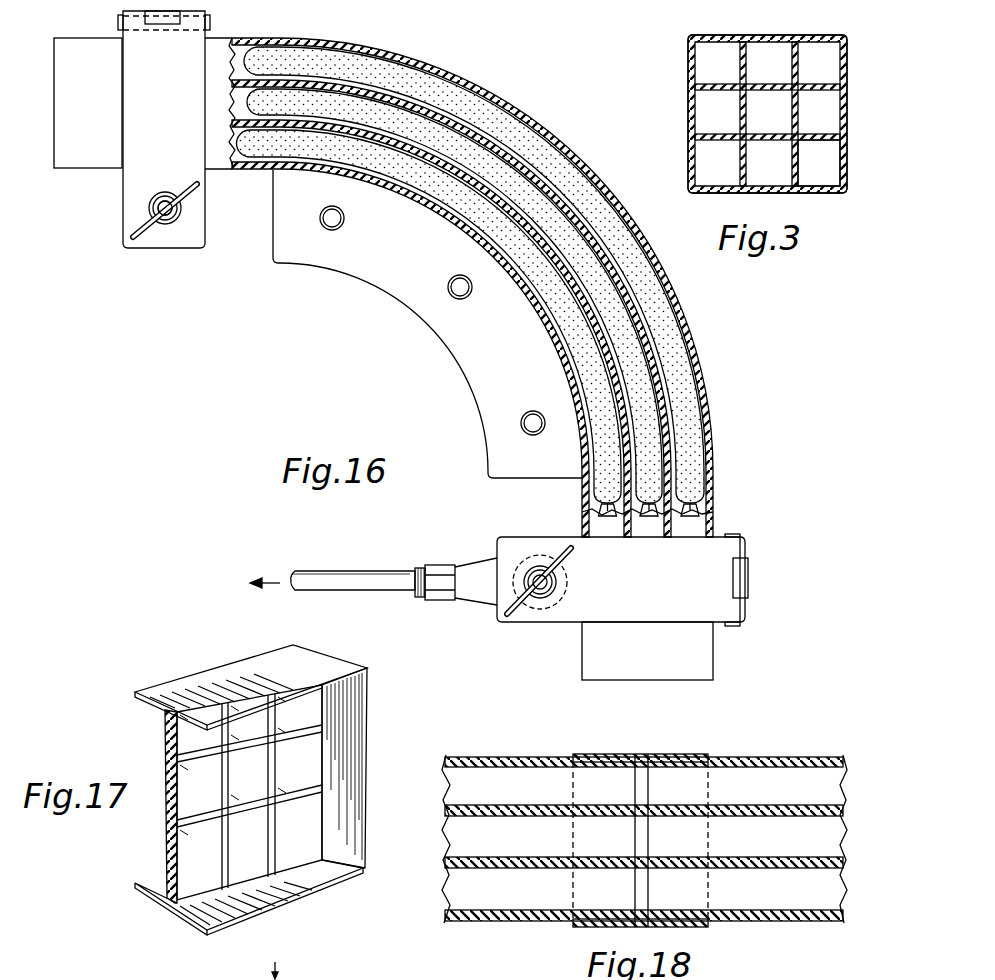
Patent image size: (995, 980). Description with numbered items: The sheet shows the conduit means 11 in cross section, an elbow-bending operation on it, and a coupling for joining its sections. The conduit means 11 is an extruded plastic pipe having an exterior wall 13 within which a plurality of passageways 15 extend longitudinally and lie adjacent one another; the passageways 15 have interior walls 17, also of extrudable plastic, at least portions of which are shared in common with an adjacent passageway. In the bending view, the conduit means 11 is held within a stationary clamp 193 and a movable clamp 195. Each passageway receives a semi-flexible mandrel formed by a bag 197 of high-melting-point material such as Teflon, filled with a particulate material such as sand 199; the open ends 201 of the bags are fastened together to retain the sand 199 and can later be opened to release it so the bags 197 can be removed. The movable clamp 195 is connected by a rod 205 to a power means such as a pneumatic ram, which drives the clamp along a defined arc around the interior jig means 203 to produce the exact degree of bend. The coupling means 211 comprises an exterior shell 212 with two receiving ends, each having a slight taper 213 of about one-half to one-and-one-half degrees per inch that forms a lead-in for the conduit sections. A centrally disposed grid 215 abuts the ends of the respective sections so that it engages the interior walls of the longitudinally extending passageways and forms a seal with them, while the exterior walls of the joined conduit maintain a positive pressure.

In FIG. 3, the conduit means 11 is at (882, 31).
In FIG. 16, the conduit means 11 is at (718, 655).
In FIG. 18, the conduit means 11 is at (521, 923).
In FIG. 3, the exterior wall 13 is at (848, 72).
In FIG. 3, the passageways 15 is at (838, 170).
In FIG. 3, the interior walls 17 is at (822, 132).
In FIG. 16, the stationary clamp 193 is at (163, 237).
In FIG. 16, the movable clamp 195 is at (556, 542).
In FIG. 16, the bag 197 is at (421, 63).
In FIG. 16, the sand 199 is at (480, 115).
In FIG. 16, the open ends 201 is at (700, 494).
In FIG. 16, the interior jig means 203 is at (405, 292).
In FIG. 16, the rod 205 is at (345, 571).
In FIG. 17, the coupling means 211 is at (157, 676).
In FIG. 18, the coupling means 211 is at (640, 757).
In FIG. 17, the exterior shell 212 is at (370, 705).
In FIG. 17, the taper 213 is at (153, 885).
In FIG. 18, the taper 213 is at (573, 800).
In FIG. 17, the grid 215 is at (167, 755).
In FIG. 18, the grid 215 is at (643, 797).